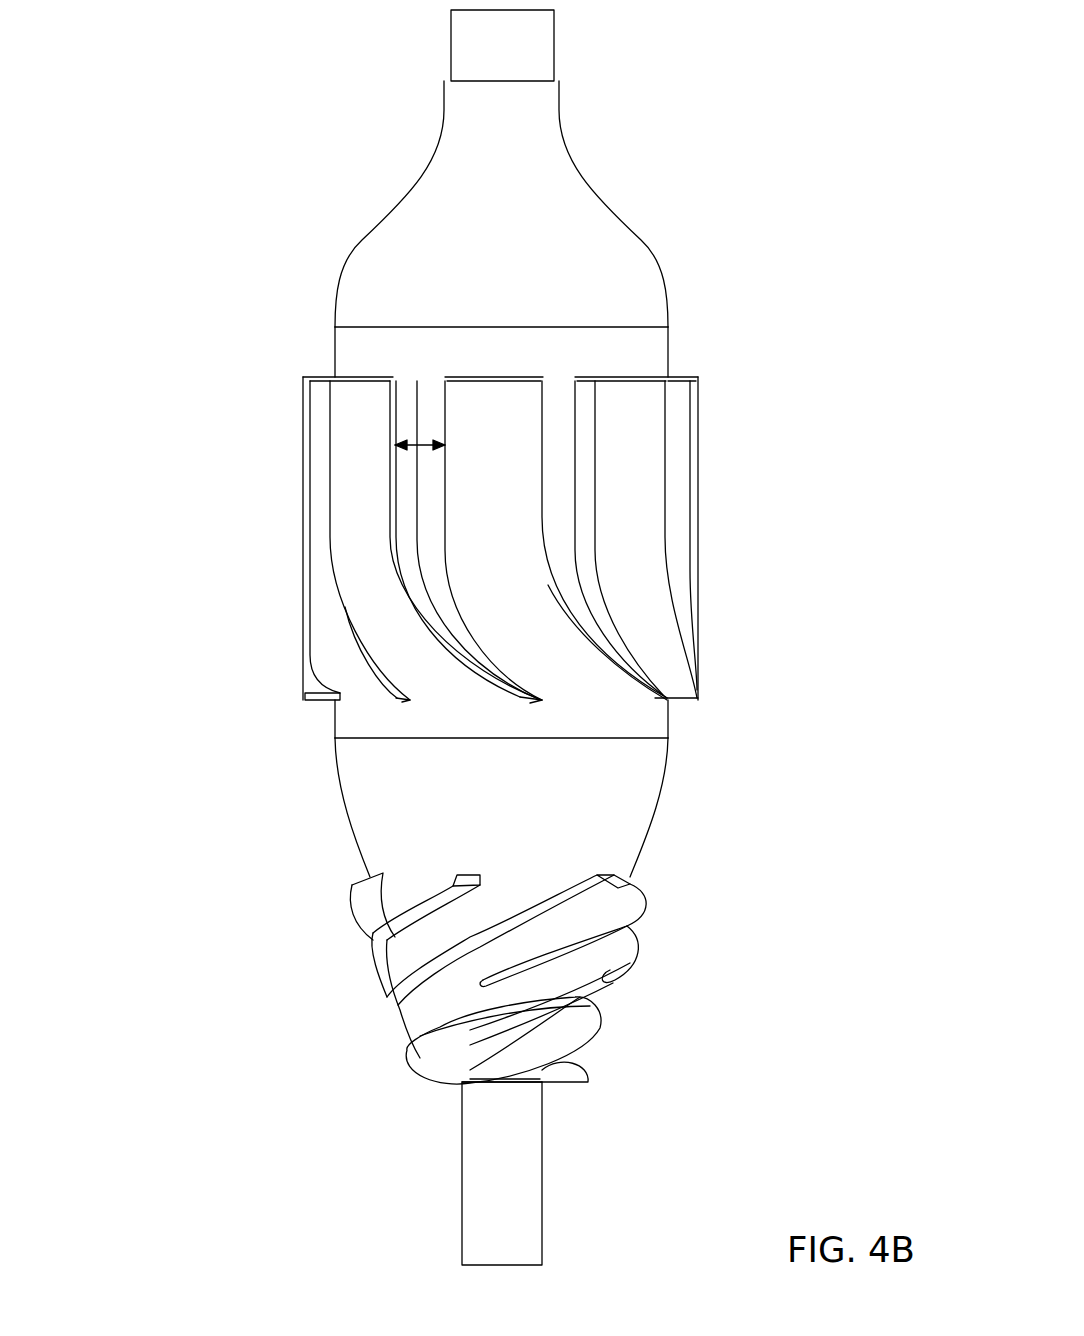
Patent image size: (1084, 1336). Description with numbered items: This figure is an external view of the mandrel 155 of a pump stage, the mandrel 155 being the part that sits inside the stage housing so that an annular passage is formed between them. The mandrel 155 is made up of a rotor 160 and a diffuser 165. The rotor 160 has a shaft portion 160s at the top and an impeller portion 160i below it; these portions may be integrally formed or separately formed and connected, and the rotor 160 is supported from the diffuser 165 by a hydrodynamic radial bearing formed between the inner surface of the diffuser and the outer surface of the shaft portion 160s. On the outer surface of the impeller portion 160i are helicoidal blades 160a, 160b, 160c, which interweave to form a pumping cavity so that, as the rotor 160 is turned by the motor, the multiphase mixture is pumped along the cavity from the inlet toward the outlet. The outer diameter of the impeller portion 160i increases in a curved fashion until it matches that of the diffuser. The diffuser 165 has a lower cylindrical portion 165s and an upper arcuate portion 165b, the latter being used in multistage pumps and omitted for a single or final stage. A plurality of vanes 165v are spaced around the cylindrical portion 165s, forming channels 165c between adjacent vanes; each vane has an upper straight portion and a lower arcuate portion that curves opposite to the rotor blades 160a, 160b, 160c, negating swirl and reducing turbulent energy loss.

The mandrel 155 is at (135, 63).
The shaft portion 160s is at (524, 60).
The diffuser 165 is at (255, 220).
The upper arcuate portion 165b is at (362, 240).
The channels 165c is at (427, 440).
The vanes 165v is at (518, 487).
The lower cylindrical portion 165s is at (668, 356).
The rotor 160 is at (648, 1127).
The impeller portion 160i is at (530, 824).
The helicoidal blade 160c is at (635, 900).
The helicoidal blade 160b is at (595, 1023).
The helicoidal blade 160a is at (570, 1078).